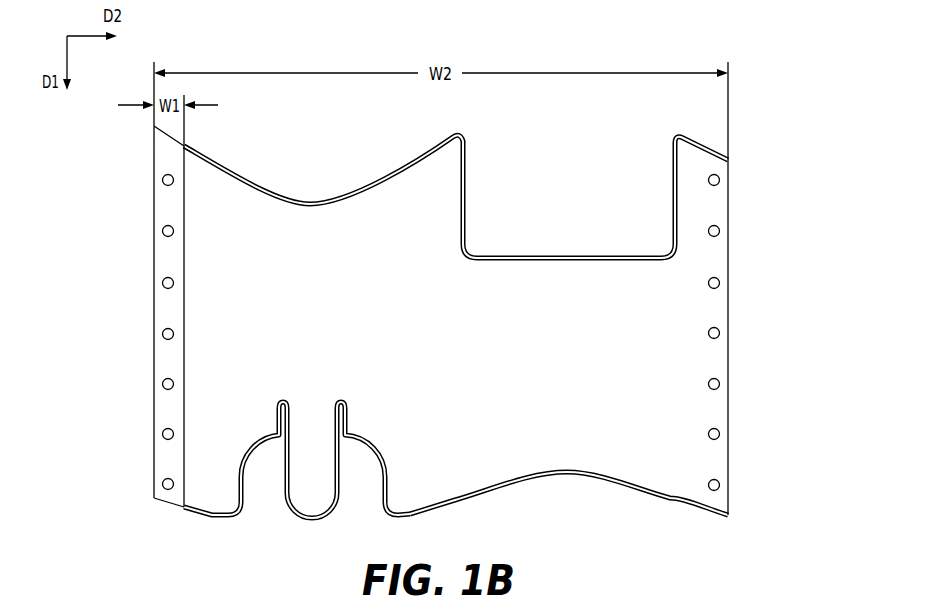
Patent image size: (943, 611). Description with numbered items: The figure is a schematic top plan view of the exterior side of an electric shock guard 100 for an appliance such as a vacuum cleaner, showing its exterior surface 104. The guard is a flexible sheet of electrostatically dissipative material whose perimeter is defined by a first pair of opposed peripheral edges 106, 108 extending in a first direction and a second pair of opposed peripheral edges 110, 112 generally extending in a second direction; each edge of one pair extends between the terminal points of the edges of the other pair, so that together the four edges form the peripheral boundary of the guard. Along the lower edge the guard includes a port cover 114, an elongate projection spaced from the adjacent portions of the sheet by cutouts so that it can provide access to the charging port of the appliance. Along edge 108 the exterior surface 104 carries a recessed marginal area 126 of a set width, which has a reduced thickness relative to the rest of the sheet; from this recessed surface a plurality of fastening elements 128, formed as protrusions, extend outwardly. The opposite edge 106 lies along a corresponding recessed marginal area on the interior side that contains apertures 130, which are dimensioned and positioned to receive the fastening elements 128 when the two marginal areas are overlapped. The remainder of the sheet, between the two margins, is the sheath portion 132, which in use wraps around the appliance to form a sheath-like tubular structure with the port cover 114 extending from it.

The electric shock guard 100 is at (457, 307).
The exterior surface 104 is at (456, 343).
The peripheral edge 106 is at (749, 288).
The peripheral edge 108 is at (134, 284).
The peripheral edge 110 is at (323, 189).
The peripheral edge 112 is at (569, 509).
The port cover 114 is at (310, 494).
The recessed marginal area 126 is at (168, 410).
The fastening elements 128 is at (163, 231).
The apertures 130 is at (719, 333).
The sheath portion 132 is at (595, 212).